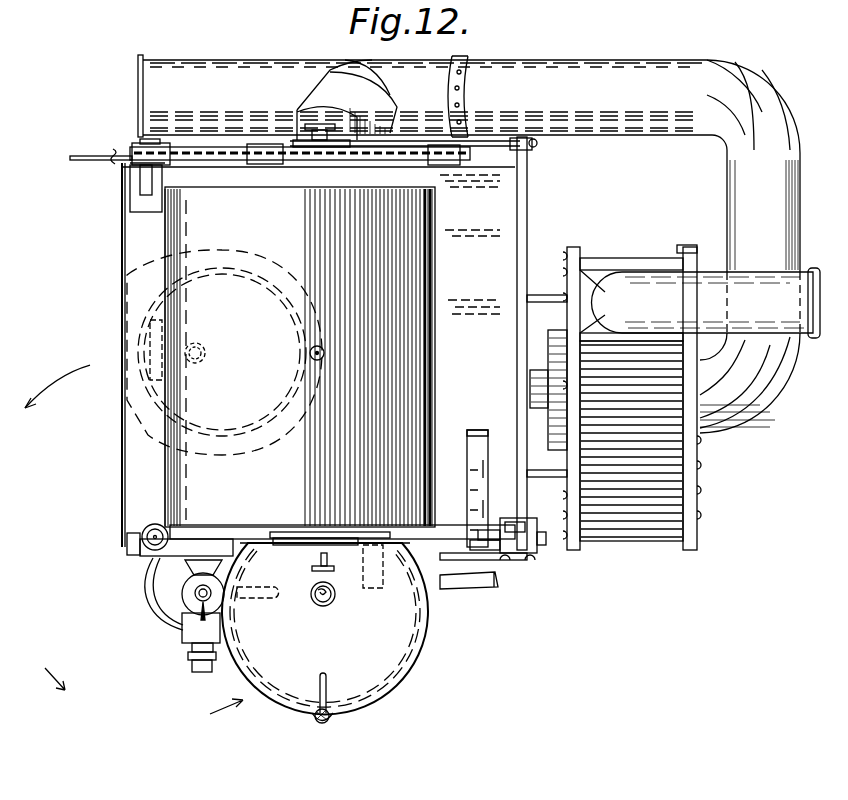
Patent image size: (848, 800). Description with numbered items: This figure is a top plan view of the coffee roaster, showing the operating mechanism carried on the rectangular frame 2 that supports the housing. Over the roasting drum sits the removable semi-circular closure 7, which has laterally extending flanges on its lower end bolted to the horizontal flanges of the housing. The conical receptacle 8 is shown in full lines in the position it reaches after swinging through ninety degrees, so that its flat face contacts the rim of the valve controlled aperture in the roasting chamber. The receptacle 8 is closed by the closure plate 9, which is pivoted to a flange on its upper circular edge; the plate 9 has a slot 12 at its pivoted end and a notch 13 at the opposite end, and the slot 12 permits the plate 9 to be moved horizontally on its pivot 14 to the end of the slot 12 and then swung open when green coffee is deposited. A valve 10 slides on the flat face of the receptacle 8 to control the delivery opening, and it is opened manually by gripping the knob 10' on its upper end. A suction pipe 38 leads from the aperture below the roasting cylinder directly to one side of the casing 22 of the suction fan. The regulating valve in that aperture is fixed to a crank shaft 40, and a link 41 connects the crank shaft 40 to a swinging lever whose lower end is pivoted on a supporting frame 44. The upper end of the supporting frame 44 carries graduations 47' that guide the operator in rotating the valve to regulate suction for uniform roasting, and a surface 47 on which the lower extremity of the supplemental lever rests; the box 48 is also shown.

The frame 2 is at (122, 240).
The removable semi-circular closure 7 is at (281, 357).
The conical receptacle 8 is at (420, 656).
The closure plate 9 is at (405, 623).
The valve 10 is at (310, 571).
The knob 10' is at (343, 589).
The slot 12 is at (333, 698).
The notch 13 is at (290, 551).
The pivot 14 is at (322, 723).
The casing of the suction fan 22 is at (698, 470).
The suction pipe 38 is at (183, 130).
The crank shaft 40 is at (500, 140).
The link 41 is at (527, 200).
The supporting frame 44 is at (487, 543).
The surface 47 is at (493, 519).
The graduations 47' is at (477, 464).
The control box 48 is at (540, 549).